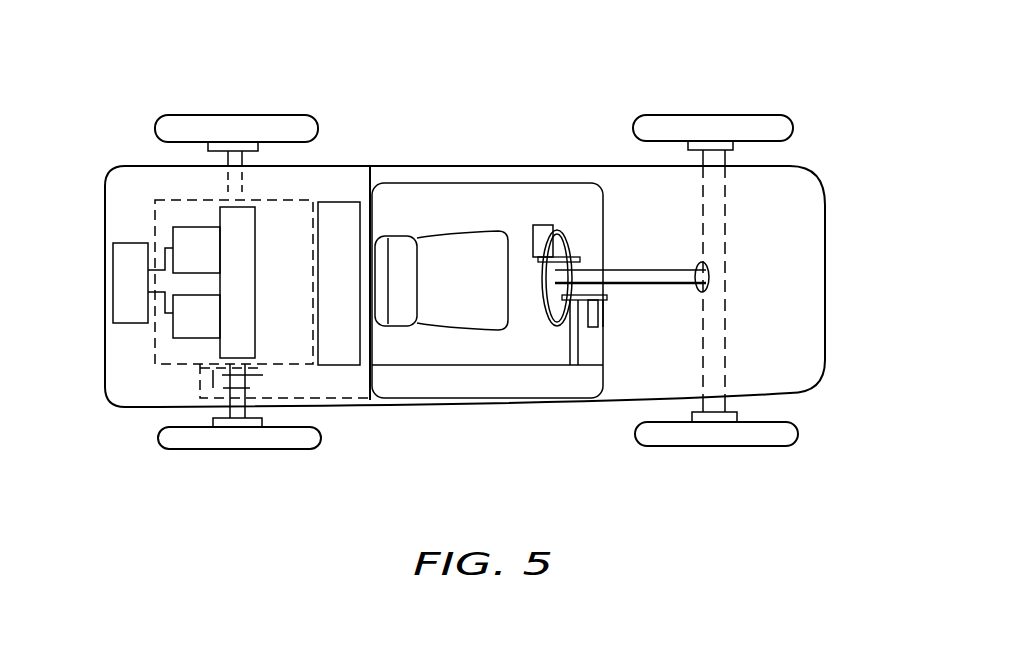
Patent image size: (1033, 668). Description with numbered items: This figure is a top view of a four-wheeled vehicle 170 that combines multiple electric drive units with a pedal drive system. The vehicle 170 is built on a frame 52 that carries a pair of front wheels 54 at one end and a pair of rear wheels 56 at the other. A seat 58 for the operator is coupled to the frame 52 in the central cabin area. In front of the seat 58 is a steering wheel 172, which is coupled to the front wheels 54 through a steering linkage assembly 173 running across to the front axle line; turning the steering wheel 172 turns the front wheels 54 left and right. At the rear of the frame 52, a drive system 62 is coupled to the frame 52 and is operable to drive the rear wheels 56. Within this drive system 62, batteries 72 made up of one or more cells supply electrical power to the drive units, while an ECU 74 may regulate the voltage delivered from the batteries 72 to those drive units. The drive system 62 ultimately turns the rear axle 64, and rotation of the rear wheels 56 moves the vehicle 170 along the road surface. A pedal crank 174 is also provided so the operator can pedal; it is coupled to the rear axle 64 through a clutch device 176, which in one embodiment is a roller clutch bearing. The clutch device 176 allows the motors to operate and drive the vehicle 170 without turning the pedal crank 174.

The vehicle 170 is at (497, 207).
The frame 52 is at (817, 233).
The front wheels 54 is at (748, 114).
The rear wheels 56 is at (200, 122).
The seat 58 is at (477, 298).
The drive system 62 is at (165, 357).
The rear axle 64 is at (236, 155).
The batteries 72 is at (343, 210).
The ECU 74 is at (122, 268).
The steering wheel 172 is at (572, 252).
The steering linkage assembly 173 is at (722, 321).
The pedal crank 174 is at (607, 316).
The clutch device 176 is at (250, 382).